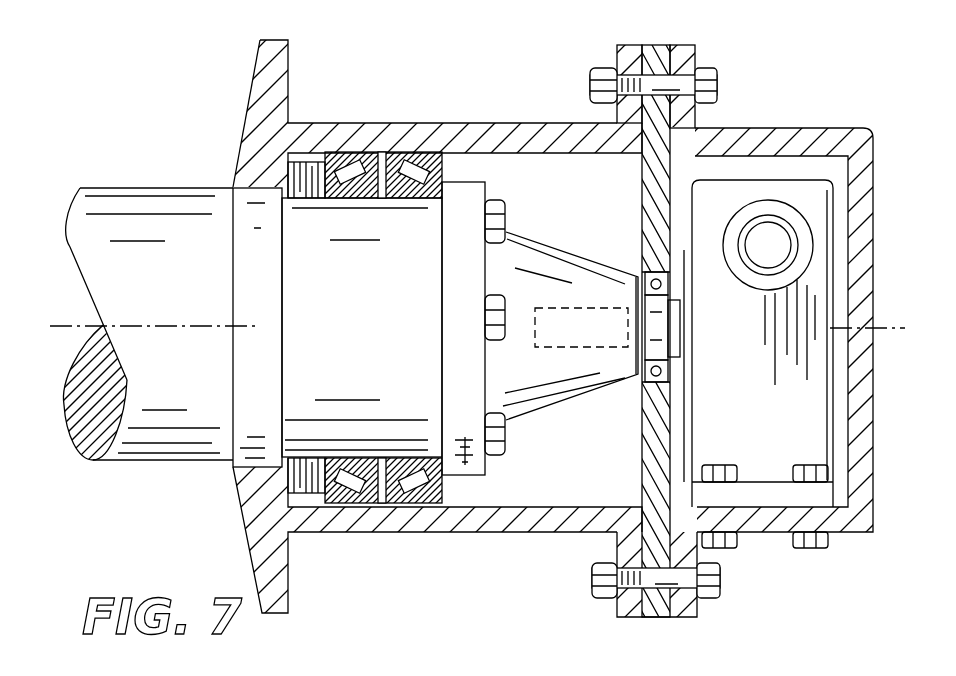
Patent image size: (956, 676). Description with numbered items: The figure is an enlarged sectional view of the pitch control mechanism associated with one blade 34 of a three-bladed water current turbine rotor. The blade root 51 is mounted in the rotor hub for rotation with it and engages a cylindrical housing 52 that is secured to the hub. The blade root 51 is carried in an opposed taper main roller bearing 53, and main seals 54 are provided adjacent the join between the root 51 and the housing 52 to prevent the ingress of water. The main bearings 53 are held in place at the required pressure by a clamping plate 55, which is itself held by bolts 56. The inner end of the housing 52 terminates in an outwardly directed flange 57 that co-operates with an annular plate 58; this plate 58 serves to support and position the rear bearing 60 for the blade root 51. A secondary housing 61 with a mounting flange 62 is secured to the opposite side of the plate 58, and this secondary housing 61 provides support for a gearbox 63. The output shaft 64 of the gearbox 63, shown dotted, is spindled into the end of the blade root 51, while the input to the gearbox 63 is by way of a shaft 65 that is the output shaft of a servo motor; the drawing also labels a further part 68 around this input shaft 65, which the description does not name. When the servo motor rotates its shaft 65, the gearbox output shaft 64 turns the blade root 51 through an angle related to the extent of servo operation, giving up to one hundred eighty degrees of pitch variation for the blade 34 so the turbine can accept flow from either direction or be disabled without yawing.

The blade 34 is at (180, 435).
The blade root 51 is at (388, 322).
The cylindrical housing 52 is at (445, 525).
The opposed taper main roller bearing 53 is at (417, 487).
The main seal 54 is at (293, 165).
The clamping plate 55 is at (467, 440).
The bolt 56 is at (505, 443).
The outwardly directed flange 57 is at (628, 58).
The annular plate 58 is at (655, 195).
The rear bearing 60 is at (662, 320).
The secondary housing 61 is at (847, 525).
The mounting flange 62 is at (693, 55).
The gearbox 63 is at (795, 444).
The output shaft 64 is at (590, 335).
The shaft 65 is at (773, 243).
The bushing 68 is at (778, 210).